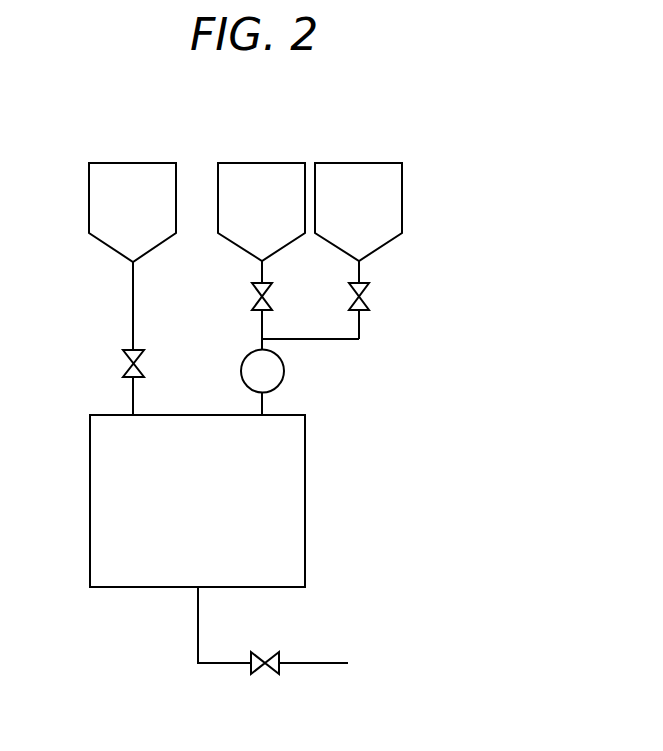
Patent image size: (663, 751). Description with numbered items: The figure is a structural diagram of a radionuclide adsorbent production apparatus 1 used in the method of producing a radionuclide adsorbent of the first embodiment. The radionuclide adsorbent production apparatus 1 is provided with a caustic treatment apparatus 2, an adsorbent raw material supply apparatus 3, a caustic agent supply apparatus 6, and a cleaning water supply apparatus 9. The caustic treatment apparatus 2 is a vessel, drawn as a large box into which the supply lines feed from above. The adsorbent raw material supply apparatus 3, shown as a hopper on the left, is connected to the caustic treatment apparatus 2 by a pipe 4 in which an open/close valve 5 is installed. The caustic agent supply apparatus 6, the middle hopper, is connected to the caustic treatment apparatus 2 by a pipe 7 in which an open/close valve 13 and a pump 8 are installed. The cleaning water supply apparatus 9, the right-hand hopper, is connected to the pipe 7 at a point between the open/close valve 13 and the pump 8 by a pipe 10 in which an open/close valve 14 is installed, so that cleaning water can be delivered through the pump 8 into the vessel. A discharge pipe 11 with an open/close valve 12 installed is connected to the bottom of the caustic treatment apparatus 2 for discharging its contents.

The radionuclide adsorbent production apparatus 1 is at (418, 440).
The caustic treatment apparatus 2 is at (100, 495).
The adsorbent raw material supply apparatus 3 is at (131, 176).
The pipe 4 is at (131, 304).
The open/close valve 5 is at (129, 366).
The caustic agent supply apparatus 6 is at (261, 176).
The pipe 7 is at (260, 328).
The pump 8 is at (282, 379).
The cleaning water supply apparatus 9 is at (358, 176).
The pipe 10 is at (332, 340).
The discharge pipe 11 is at (320, 662).
The open/close valve 12 is at (262, 655).
The open/close valve 13 is at (271, 296).
The open/close valve 14 is at (369, 296).